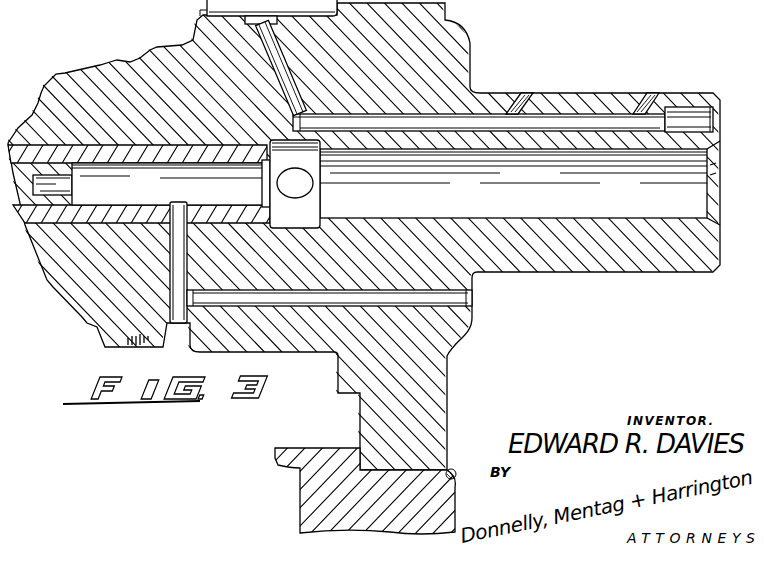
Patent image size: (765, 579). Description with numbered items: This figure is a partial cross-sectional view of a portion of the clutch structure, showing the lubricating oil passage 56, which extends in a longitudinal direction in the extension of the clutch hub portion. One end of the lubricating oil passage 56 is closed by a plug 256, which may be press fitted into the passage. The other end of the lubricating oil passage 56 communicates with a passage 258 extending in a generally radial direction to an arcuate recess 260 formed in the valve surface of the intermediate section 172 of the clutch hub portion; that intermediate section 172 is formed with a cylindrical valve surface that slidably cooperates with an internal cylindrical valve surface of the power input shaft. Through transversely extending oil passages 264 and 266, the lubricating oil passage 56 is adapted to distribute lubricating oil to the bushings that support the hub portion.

The intermediate section 172 is at (200, 14).
The arcuate recess 260 is at (268, 12).
The passage 258 is at (283, 67).
The oil passage 264 is at (522, 98).
The lubricating oil passage 56 is at (580, 122).
The oil passage 266 is at (652, 93).
The plug 256 is at (693, 112).